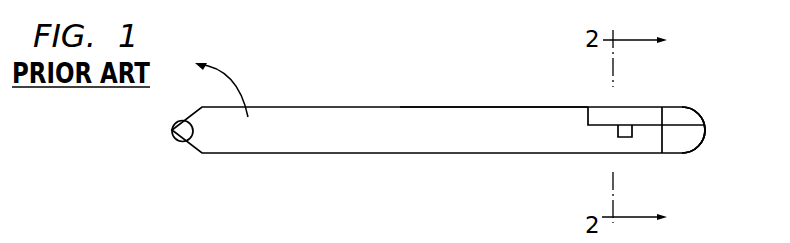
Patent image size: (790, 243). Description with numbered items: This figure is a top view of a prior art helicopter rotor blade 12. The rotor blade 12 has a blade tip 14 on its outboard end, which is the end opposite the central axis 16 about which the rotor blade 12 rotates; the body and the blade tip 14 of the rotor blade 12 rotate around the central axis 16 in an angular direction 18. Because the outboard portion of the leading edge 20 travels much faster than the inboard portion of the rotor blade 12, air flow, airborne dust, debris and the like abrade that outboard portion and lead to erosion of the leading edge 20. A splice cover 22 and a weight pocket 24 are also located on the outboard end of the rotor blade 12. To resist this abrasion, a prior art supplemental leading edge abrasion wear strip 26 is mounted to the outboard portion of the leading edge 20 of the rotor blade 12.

The helicopter rotor blade 12 is at (238, 155).
The blade tip 14 is at (699, 143).
The central axis 16 is at (179, 128).
The angular direction 18 is at (233, 85).
The leading edge 20 is at (567, 107).
The splice cover 22 is at (687, 112).
The weight pocket 24 is at (618, 133).
The supplemental leading edge abrasion wear strip 26 is at (643, 107).